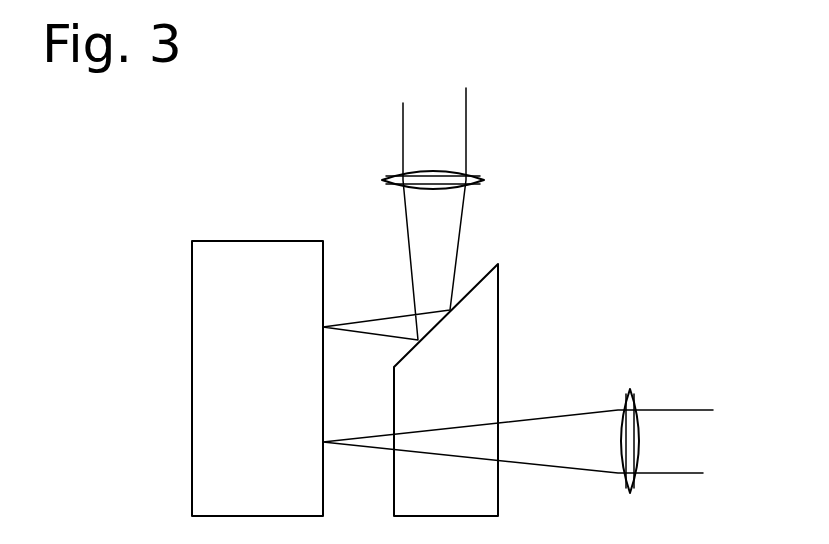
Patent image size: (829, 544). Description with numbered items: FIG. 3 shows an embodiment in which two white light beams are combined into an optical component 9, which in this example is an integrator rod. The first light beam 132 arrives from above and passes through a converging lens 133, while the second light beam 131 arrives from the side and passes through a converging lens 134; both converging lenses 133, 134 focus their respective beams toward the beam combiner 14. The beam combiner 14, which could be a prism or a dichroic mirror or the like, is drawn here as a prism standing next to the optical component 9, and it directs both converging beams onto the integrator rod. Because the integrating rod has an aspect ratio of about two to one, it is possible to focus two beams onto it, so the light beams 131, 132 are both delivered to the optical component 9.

The optical component 9 is at (223, 267).
The beam combiner 14 is at (483, 305).
The light beam 131 is at (687, 452).
The light beam 132 is at (445, 115).
The converging lens 133 is at (485, 181).
The converging lens 134 is at (633, 392).